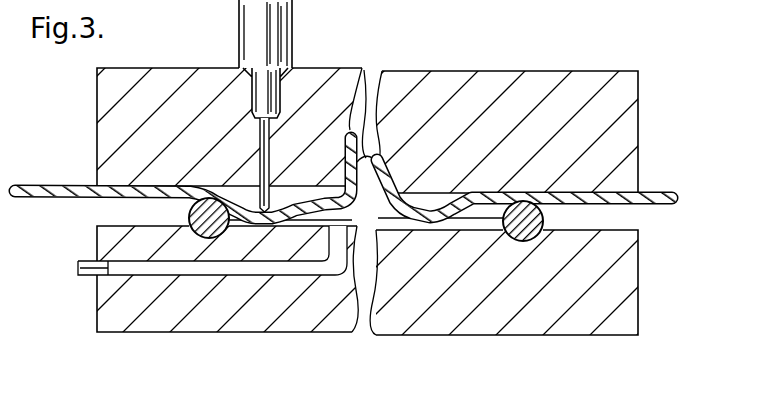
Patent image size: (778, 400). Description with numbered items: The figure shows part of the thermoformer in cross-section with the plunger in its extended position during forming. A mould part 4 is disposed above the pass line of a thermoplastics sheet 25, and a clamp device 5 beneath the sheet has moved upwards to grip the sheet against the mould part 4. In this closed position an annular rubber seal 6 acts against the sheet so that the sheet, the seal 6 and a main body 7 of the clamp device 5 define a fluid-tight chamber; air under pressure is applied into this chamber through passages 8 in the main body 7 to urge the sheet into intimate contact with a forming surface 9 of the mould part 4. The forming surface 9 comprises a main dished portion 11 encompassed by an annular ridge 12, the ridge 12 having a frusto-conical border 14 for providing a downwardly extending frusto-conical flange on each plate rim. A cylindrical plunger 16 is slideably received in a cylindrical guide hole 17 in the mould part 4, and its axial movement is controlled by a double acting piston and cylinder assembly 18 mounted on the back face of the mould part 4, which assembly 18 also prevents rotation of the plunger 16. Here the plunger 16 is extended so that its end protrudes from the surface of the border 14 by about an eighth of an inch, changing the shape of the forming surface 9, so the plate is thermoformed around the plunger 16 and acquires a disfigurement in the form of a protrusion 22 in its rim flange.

The mould part 4 is at (537, 87).
The clamp device 5 is at (470, 338).
The annular rubber seal 6 is at (543, 216).
The main body 7 is at (572, 328).
The passages 8 is at (185, 262).
The forming surface 9 is at (356, 138).
The main dished portion 11 is at (364, 188).
The annular ridge 12 is at (437, 193).
The frusto-conical border 14 is at (462, 188).
The cylindrical plunger 16 is at (360, 72).
The cylindrical guide hole 17 is at (258, 153).
The double acting piston and cylinder assembly 18 is at (240, 24).
The protrusion 22 is at (232, 234).
The thermoplastics sheet 25 is at (660, 192).